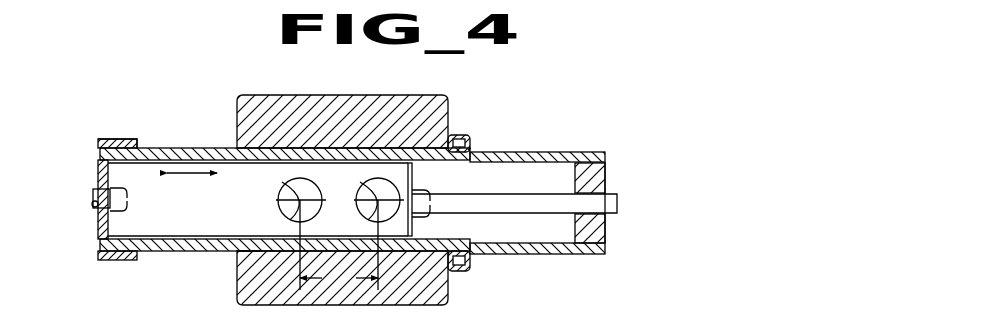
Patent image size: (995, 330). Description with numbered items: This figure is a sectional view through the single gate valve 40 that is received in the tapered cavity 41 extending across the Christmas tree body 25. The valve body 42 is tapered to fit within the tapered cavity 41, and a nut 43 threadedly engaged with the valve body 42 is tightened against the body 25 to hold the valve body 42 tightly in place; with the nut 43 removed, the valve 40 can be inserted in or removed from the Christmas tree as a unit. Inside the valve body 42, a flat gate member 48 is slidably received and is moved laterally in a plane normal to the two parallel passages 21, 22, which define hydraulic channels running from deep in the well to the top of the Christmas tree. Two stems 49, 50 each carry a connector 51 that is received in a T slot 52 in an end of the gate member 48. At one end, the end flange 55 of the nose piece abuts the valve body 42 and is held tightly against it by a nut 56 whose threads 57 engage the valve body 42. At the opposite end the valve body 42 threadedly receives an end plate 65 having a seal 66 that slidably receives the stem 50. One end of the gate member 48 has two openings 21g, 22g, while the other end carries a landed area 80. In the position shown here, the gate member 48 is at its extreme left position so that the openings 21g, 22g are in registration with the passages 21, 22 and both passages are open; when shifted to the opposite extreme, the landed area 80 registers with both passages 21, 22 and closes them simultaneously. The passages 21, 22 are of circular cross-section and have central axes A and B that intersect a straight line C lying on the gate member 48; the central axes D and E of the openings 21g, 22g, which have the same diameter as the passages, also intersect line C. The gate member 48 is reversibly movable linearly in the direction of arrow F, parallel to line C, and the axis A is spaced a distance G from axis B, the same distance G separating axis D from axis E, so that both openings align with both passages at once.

The Christmas tree body 25 is at (273, 96).
The valve 40 is at (173, 253).
The tapered cavity 41 is at (234, 258).
The valve body 42 is at (152, 148).
The nut 43 is at (467, 135).
The gate member 48 is at (220, 161).
The stem 49 is at (93, 193).
The stem 50 is at (608, 205).
The connector 51 is at (127, 195).
The T slot 52 is at (127, 205).
The end flange 55 is at (98, 166).
The nut 56 is at (108, 139).
The threads 57 is at (98, 143).
The end plate 65 is at (607, 173).
The seal 66 is at (607, 222).
The landed area 80 is at (200, 208).
The passage 21 is at (302, 182).
The passage 22 is at (380, 182).
The opening 21g is at (280, 193).
The opening 22g is at (413, 172).
The central axis A is at (297, 201).
The central axis B is at (375, 204).
The straight line C is at (285, 200).
The central axis D is at (297, 199).
The central axis E is at (375, 198).
The arrow F is at (190, 173).
The distance G is at (339, 278).